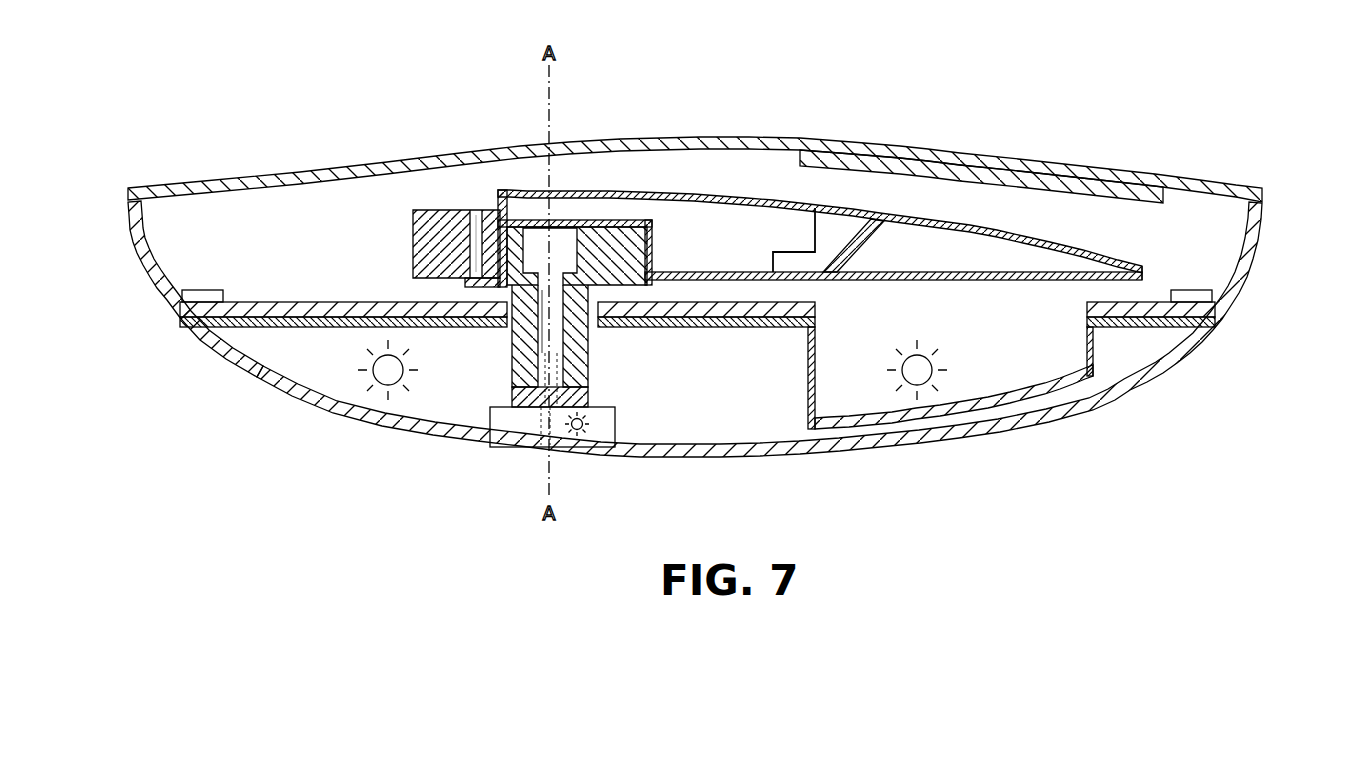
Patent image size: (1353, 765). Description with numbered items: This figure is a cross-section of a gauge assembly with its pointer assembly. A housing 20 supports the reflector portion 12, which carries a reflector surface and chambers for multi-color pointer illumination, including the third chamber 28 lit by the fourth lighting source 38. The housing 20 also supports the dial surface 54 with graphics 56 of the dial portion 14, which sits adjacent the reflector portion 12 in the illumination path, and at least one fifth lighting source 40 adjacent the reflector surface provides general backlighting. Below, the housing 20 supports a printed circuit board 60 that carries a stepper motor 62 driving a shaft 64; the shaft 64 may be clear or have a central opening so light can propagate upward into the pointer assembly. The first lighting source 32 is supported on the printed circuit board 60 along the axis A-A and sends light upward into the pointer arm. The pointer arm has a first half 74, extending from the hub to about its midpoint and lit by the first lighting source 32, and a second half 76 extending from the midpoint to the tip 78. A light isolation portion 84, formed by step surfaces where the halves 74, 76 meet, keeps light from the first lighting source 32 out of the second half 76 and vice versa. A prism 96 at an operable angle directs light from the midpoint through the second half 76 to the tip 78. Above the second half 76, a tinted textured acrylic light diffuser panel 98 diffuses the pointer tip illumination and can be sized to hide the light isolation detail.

The reflector portion 12 is at (866, 440).
The dial portion 14 is at (162, 313).
The housing 20 is at (1260, 274).
The third chamber 28 is at (1046, 368).
The first lighting source 32 is at (583, 447).
The fourth lighting source 38 is at (933, 382).
The fifth lighting source 40 is at (368, 385).
The dial surface 54 is at (268, 302).
The graphics 56 is at (207, 291).
The printed circuit board 60 is at (609, 447).
The stepper motor 62 is at (530, 407).
The shaft 64 is at (586, 398).
The first half 74 is at (702, 192).
The second half 76 is at (942, 282).
The tip 78 is at (1144, 270).
The light isolation portion 84 is at (826, 234).
The prism 96 is at (856, 236).
The light diffuser panel 98 is at (1100, 190).